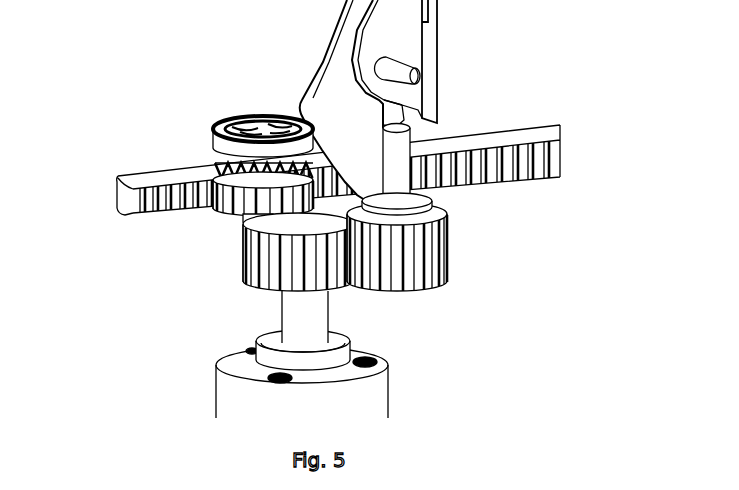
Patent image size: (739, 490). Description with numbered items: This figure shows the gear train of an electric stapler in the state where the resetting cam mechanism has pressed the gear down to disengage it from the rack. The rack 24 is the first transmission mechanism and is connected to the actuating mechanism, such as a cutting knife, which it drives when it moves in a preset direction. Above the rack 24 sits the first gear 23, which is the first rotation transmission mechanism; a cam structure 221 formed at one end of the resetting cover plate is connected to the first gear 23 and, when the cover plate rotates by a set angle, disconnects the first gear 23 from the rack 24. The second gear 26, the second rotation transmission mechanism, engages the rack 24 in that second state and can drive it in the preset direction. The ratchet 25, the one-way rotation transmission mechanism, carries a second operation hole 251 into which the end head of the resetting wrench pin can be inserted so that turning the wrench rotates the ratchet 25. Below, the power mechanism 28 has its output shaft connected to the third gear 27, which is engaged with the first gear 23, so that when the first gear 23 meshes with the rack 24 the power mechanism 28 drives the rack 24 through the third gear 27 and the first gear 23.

The second operation hole 251 is at (228, 118).
The ratchet 25 is at (215, 168).
The second gear 26 is at (222, 208).
The third gear 27 is at (290, 232).
The first gear 23 is at (413, 237).
The rack 24 is at (467, 187).
The cam structure 221 is at (347, 168).
The power mechanism 28 is at (347, 400).